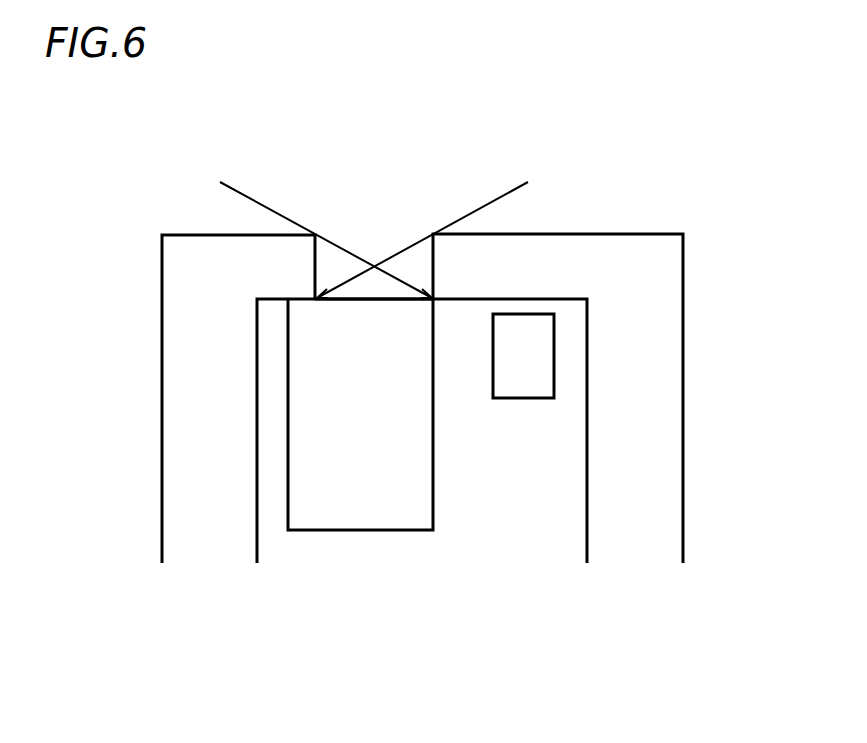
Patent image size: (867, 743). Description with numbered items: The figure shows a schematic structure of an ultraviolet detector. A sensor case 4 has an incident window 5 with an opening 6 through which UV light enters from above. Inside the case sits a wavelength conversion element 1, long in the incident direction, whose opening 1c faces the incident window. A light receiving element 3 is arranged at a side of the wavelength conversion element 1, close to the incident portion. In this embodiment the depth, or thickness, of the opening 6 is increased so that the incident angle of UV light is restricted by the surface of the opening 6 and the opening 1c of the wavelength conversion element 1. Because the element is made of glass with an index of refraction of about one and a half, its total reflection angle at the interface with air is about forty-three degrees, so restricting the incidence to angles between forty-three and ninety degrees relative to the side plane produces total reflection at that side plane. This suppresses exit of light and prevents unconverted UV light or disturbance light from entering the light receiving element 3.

The wavelength conversion element 1 is at (288, 398).
The opening of wavelength conversion element 1c is at (397, 299).
The light receiving element 3 is at (554, 353).
The sensor case 4 is at (650, 234).
The incident window 5 is at (349, 230).
The opening 6 is at (370, 250).